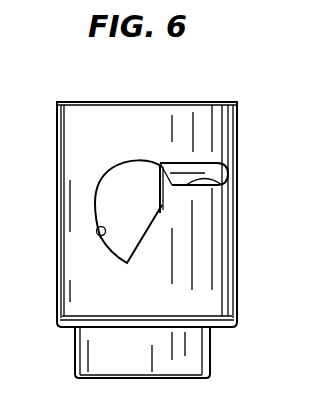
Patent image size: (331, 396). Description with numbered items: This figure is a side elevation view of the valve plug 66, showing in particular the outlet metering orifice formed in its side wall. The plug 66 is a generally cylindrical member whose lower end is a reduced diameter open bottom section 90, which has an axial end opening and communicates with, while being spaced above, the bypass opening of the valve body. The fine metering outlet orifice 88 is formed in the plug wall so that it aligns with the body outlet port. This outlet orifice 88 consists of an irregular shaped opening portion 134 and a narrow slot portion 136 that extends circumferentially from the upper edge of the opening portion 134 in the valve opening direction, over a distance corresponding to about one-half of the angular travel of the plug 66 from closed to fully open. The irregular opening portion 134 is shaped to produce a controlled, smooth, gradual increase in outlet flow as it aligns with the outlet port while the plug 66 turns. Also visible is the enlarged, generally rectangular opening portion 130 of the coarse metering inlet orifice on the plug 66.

The valve plug 66 is at (200, 101).
The fine metering outlet orifice 88 is at (107, 172).
The reduced diameter open bottom section 90 is at (85, 344).
The enlarged, generally rectangular opening portion 130 is at (158, 181).
The irregular shaped opening portion 134 is at (100, 236).
The narrow slot portion 136 is at (226, 183).